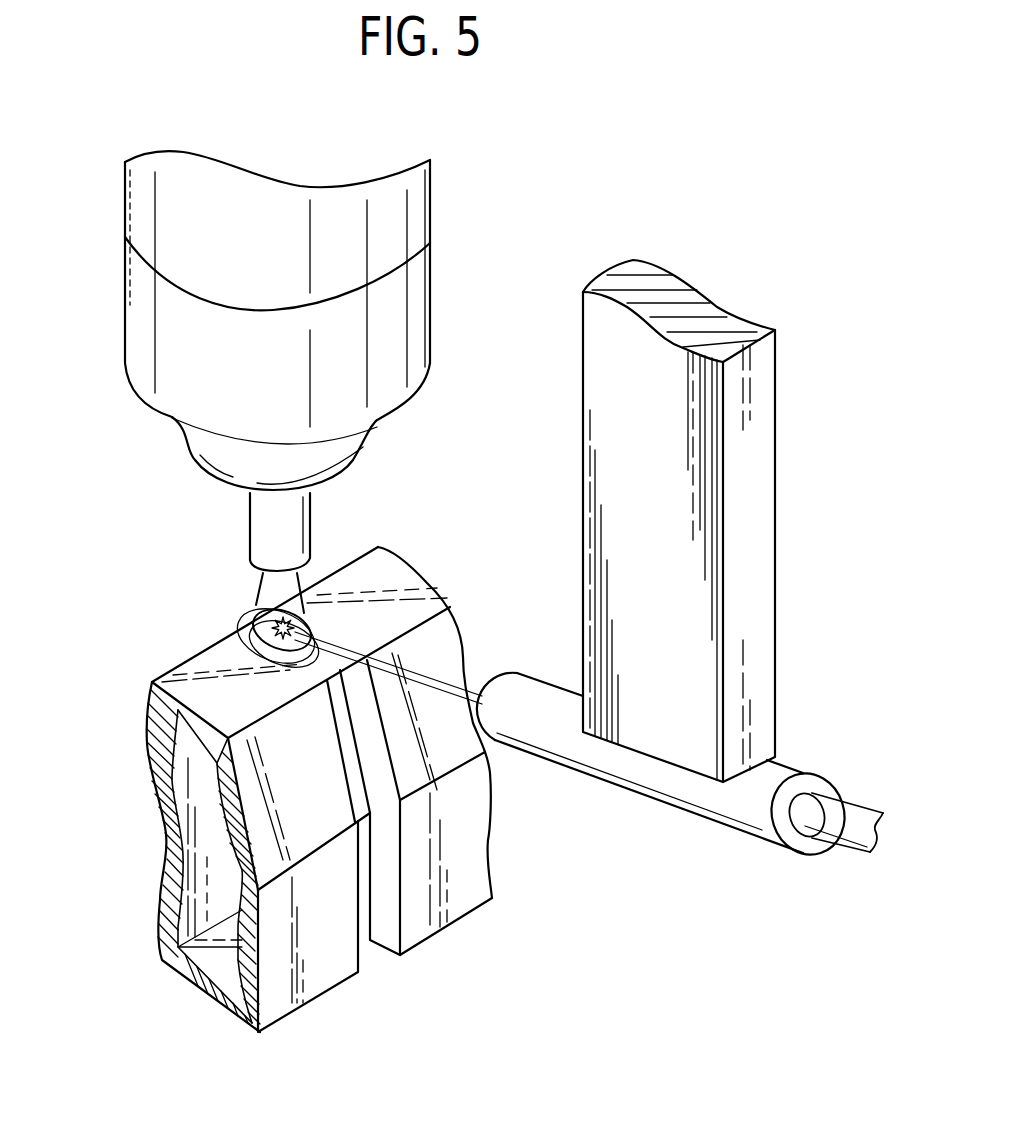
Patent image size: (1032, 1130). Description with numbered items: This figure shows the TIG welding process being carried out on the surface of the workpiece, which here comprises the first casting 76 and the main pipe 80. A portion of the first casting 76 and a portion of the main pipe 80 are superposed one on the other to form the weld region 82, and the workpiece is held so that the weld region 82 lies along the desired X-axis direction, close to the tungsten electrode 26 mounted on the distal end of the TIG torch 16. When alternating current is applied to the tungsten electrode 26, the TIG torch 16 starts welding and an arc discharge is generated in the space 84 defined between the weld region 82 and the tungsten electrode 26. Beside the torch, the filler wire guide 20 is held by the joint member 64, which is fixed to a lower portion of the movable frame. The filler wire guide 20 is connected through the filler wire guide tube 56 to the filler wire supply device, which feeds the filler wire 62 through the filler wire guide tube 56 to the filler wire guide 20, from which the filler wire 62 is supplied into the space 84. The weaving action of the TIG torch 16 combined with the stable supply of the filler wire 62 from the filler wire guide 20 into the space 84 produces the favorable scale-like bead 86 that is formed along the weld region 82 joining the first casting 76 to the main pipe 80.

The TIG torch 16 is at (127, 321).
The tungsten electrode 26 is at (257, 533).
The space 84 is at (257, 598).
The scale-like bead 86 is at (233, 631).
The filler wire 62 is at (445, 685).
The main pipe 80 is at (320, 983).
The weld region 82 is at (362, 920).
The first casting 76 is at (460, 892).
The filler wire guide 20 is at (637, 783).
The filler wire guide tube 56 is at (836, 823).
The joint member 64 is at (753, 595).